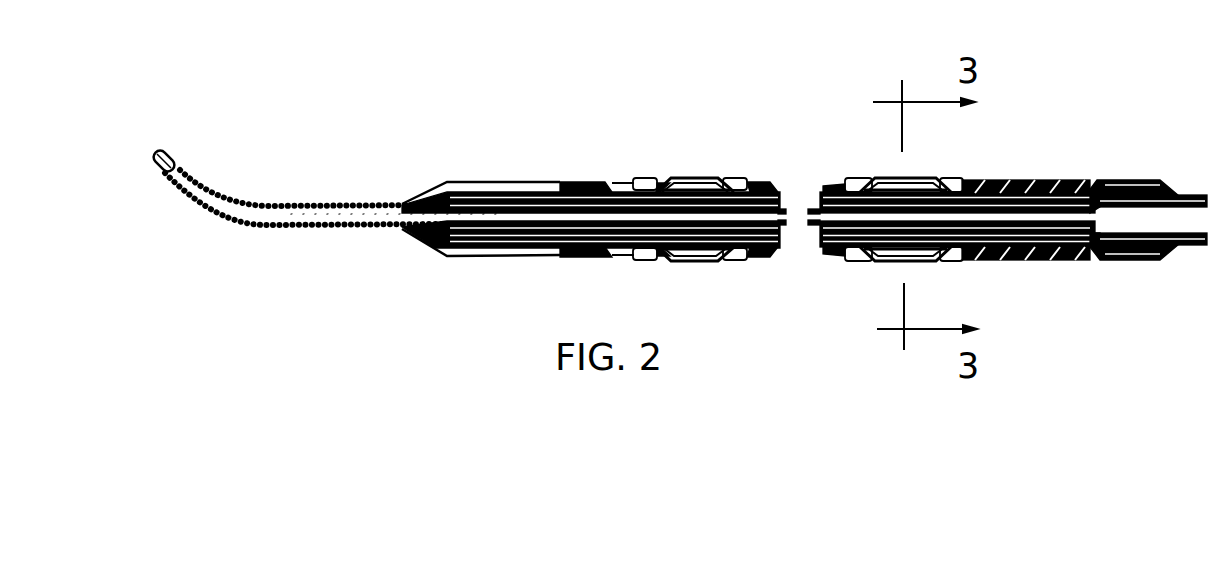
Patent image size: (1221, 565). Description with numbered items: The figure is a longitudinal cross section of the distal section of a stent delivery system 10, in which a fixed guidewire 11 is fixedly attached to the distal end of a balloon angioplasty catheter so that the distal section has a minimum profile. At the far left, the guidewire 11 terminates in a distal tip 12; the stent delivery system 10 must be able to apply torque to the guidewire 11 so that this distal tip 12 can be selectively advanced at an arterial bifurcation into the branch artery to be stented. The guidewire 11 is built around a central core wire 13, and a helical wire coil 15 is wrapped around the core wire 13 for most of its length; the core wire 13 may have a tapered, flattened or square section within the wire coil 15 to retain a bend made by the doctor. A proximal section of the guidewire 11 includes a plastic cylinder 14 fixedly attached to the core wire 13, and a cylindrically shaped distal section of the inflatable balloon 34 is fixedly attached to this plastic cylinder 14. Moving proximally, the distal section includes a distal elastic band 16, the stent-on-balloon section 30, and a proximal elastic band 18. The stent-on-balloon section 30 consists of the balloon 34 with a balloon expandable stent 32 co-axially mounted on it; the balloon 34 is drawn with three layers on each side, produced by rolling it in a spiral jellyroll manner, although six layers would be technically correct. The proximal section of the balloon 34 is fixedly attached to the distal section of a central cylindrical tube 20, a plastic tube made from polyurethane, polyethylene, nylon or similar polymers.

The stent delivery system 10 is at (392, 70).
The guidewire 11 is at (298, 153).
The distal tip 12 is at (156, 150).
The core wire 13 is at (277, 220).
The plastic cylinder 14 is at (500, 194).
The helical wire coil 15 is at (208, 184).
The distal elastic band 16 is at (581, 178).
The proximal elastic band 18 is at (1105, 175).
The central cylindrical tube 20 is at (1190, 245).
The stent-on-balloon section 30 is at (740, 151).
The balloon expandable stent 32 is at (641, 178).
The inflatable balloon 34 is at (678, 260).